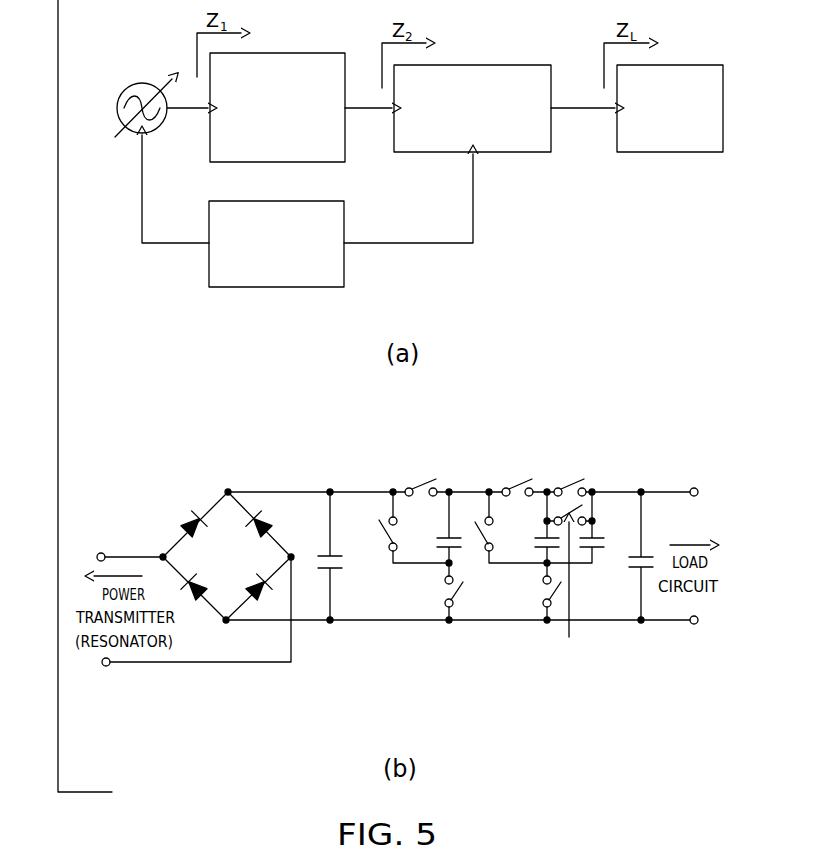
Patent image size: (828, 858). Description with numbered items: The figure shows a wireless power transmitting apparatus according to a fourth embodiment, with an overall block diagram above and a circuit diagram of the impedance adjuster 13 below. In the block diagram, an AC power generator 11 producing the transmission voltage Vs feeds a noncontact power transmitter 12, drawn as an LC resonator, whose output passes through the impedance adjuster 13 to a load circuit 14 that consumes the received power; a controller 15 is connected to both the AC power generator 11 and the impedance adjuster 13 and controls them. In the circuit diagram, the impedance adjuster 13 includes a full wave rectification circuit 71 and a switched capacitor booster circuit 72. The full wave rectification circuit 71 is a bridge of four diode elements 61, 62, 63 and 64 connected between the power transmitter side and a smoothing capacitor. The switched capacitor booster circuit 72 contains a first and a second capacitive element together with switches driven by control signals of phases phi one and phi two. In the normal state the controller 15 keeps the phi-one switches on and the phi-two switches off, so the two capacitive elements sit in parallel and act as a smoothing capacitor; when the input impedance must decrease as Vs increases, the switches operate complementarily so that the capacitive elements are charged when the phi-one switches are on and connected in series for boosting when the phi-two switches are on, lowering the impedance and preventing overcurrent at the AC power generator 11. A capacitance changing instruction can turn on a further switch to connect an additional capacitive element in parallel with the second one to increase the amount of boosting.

The AC power generator 11 is at (142, 82).
The noncontact power transmitter 12 is at (278, 53).
The impedance adjuster 13 is at (473, 65).
The load circuit 14 is at (672, 65).
The controller 15 is at (277, 289).
The diode element 61 is at (191, 517).
The diode element 62 is at (268, 524).
The diode element 63 is at (199, 584).
The diode element 64 is at (266, 594).
The full wave rectification circuit 71 is at (393, 598).
The switched capacitor booster circuit 72 is at (650, 682).